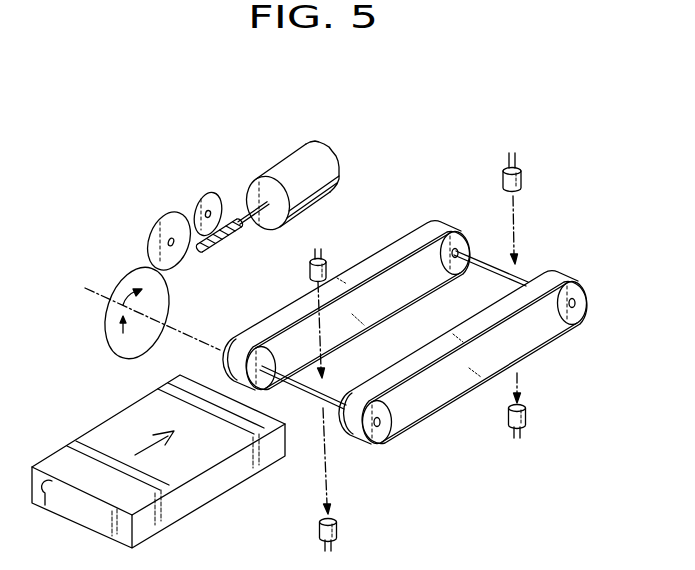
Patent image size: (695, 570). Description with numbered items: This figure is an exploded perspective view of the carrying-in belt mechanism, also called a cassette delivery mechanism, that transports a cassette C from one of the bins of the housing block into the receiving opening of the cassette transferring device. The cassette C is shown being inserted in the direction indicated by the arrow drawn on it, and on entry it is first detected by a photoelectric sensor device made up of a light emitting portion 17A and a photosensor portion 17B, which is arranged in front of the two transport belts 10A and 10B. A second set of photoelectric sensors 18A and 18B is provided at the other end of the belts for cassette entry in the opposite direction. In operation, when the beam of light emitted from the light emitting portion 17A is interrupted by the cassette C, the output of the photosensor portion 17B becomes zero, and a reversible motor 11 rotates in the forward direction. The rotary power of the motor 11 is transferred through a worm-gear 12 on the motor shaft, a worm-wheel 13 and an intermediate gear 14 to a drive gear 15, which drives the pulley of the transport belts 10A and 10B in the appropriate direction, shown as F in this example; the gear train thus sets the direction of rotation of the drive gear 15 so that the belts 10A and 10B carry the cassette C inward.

The transport belt 10A is at (407, 297).
The transport belt 10B is at (447, 392).
The reversible motor 11 is at (293, 157).
The worm-gear 12 is at (222, 246).
The worm-wheel 13 is at (212, 192).
The intermediate gear 14 is at (157, 220).
The drive gear 15 is at (120, 360).
The light emitting portion 17A is at (330, 256).
The photosensor portion 17B is at (338, 528).
The photoelectric sensor 18A is at (522, 180).
The photoelectric sensor 18B is at (527, 417).
The cassette C is at (202, 495).